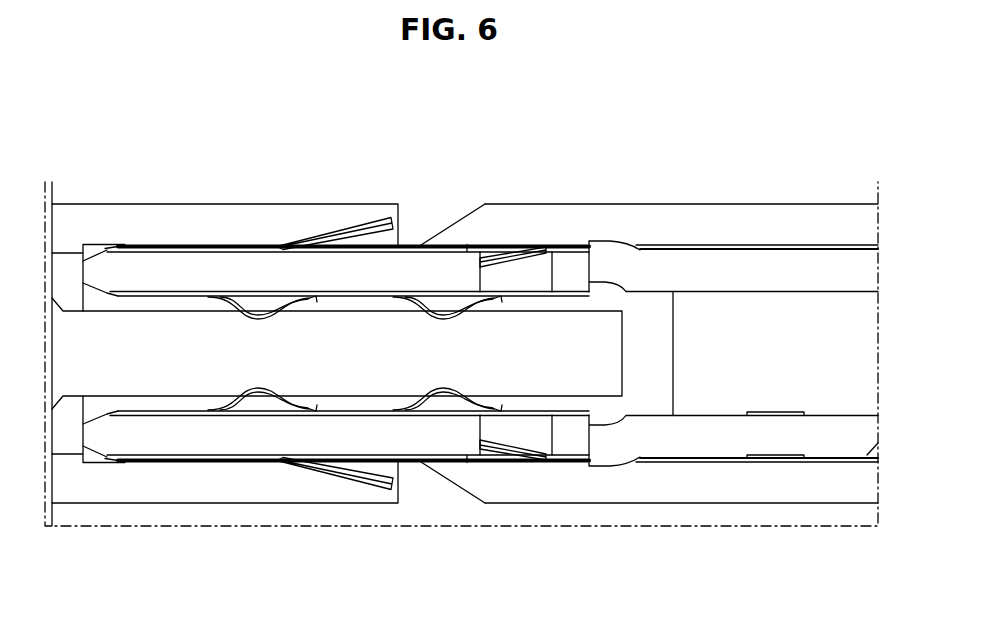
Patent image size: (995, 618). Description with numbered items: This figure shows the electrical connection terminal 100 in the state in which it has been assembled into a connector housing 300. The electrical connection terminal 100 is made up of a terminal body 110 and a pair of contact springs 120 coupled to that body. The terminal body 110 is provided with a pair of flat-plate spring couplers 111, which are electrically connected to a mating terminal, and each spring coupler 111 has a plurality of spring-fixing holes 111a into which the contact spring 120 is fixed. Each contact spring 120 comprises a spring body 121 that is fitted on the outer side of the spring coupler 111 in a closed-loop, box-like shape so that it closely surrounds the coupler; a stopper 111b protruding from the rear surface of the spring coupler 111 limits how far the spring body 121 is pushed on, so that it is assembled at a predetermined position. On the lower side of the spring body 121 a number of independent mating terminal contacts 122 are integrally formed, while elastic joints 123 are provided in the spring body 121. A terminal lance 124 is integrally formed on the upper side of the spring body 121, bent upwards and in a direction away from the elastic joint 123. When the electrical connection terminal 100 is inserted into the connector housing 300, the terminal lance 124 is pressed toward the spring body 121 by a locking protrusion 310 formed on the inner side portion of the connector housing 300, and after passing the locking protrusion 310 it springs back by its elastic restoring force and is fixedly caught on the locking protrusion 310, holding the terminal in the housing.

The electrical connection terminal 100 is at (767, 248).
The terminal body 110 is at (320, 348).
The spring coupler 111 is at (108, 267).
The spring-fixing hole 111a is at (535, 272).
The stopper 111b is at (607, 252).
The contact spring 120 is at (197, 245).
The spring body 121 is at (152, 248).
The mating terminal contact 122 is at (250, 318).
The elastic joint 123 is at (503, 258).
The terminal lance 124 is at (360, 222).
The connector housing 300 is at (690, 193).
The locking protrusion 310 is at (423, 212).